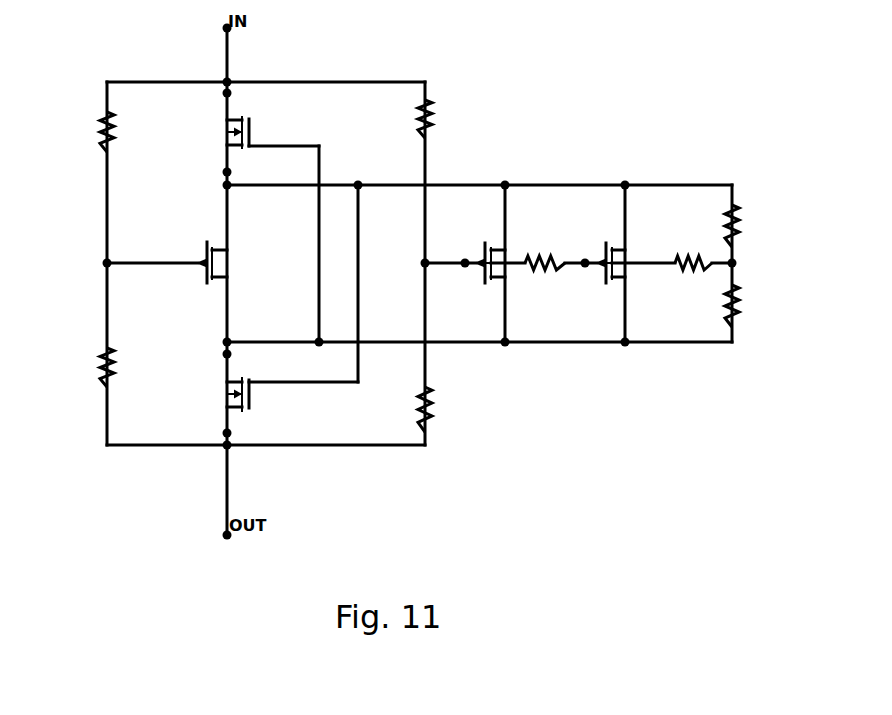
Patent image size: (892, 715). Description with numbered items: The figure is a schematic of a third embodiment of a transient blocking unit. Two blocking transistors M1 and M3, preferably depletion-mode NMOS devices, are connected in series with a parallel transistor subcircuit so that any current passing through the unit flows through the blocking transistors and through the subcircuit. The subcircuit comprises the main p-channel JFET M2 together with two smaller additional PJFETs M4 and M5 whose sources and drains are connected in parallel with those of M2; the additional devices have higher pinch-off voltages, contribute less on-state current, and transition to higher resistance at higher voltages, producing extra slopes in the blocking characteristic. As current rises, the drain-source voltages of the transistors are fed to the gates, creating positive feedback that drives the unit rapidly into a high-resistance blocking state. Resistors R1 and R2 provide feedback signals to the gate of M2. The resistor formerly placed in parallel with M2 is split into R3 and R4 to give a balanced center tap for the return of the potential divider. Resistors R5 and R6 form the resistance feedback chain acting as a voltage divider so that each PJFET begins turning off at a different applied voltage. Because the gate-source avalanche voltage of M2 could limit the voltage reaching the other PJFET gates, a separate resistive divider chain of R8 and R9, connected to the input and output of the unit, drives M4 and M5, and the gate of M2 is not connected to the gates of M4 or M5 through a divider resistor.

The transistor M1 is at (251, 130).
The transistor M2 is at (206, 250).
The transistor M3 is at (251, 396).
The transistor M4 is at (480, 270).
The transistor M5 is at (601, 272).
The resistor R1 is at (100, 134).
The resistor R2 is at (100, 376).
The resistor R3 is at (744, 230).
The resistor R4 is at (744, 320).
The resistor R5 is at (551, 262).
The resistor R6 is at (677, 262).
The resistor R8 is at (430, 127).
The resistor R9 is at (431, 418).